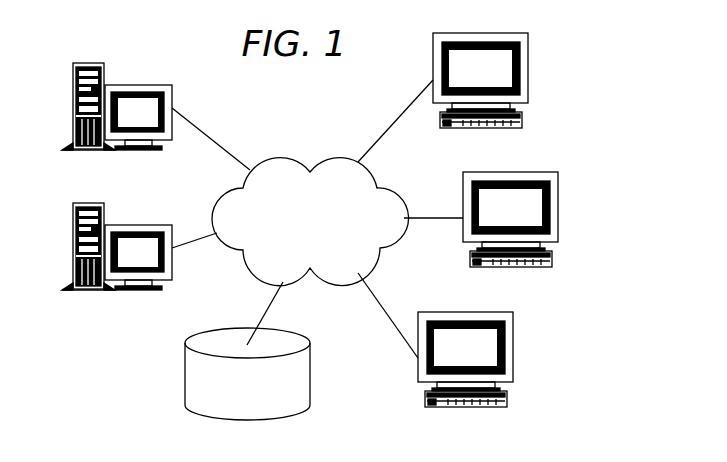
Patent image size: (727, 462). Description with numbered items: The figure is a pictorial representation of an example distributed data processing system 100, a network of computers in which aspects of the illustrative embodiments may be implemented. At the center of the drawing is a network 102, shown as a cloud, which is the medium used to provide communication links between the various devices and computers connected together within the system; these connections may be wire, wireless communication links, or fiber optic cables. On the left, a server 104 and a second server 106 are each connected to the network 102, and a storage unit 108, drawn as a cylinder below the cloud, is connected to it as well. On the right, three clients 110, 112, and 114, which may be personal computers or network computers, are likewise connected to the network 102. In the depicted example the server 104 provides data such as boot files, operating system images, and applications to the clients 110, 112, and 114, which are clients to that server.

The distributed data processing system 100 is at (147, 352).
The network 102 is at (282, 158).
The server 104 is at (135, 85).
The server 106 is at (135, 225).
The storage unit 108 is at (310, 365).
The client 110 is at (528, 73).
The client 112 is at (558, 213).
The client 114 is at (512, 350).